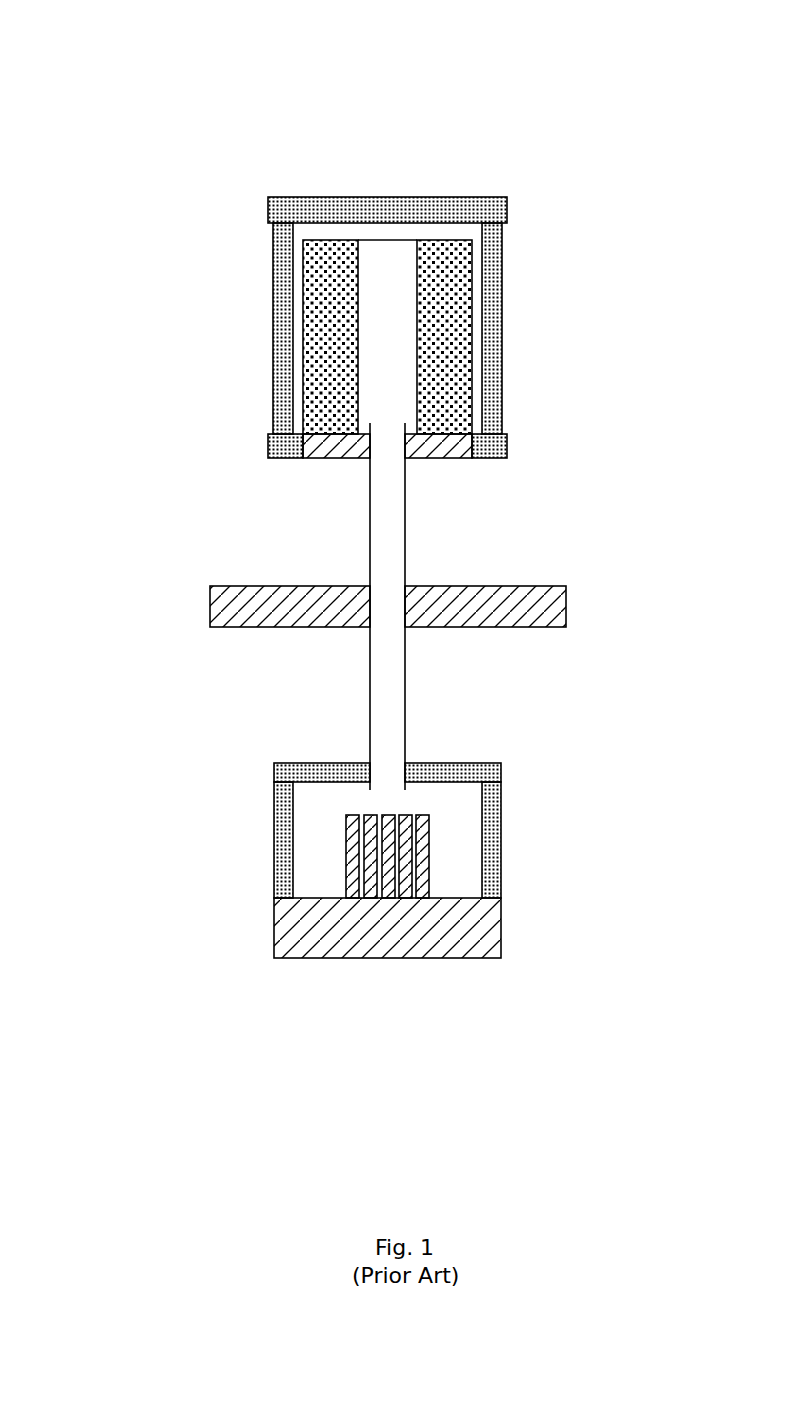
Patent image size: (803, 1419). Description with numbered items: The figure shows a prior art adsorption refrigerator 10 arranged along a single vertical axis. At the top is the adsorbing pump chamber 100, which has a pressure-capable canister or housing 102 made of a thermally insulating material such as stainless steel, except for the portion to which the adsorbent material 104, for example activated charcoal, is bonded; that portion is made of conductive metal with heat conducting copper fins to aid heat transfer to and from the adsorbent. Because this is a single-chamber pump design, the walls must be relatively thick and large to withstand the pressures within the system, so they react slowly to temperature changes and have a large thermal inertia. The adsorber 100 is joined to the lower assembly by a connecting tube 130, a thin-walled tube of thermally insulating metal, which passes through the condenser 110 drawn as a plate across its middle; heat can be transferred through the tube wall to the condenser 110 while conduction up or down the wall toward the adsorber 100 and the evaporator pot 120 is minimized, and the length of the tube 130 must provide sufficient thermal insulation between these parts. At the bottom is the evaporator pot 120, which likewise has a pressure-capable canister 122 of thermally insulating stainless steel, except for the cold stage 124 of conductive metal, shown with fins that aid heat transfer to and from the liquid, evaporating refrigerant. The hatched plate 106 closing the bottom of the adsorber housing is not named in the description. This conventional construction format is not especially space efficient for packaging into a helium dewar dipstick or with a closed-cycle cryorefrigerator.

The adsorption refrigerator 10 is at (147, 82).
The adsorbing pump chamber 100 is at (537, 302).
The housing 102 is at (274, 257).
The adsorbent material 104 is at (330, 329).
The magnet housing base plate 106 is at (333, 445).
The condenser 110 is at (590, 572).
The evaporator pot 120 is at (567, 805).
The canister 122 is at (274, 797).
The cold stage 124 is at (346, 877).
The connecting tube 130 is at (370, 693).